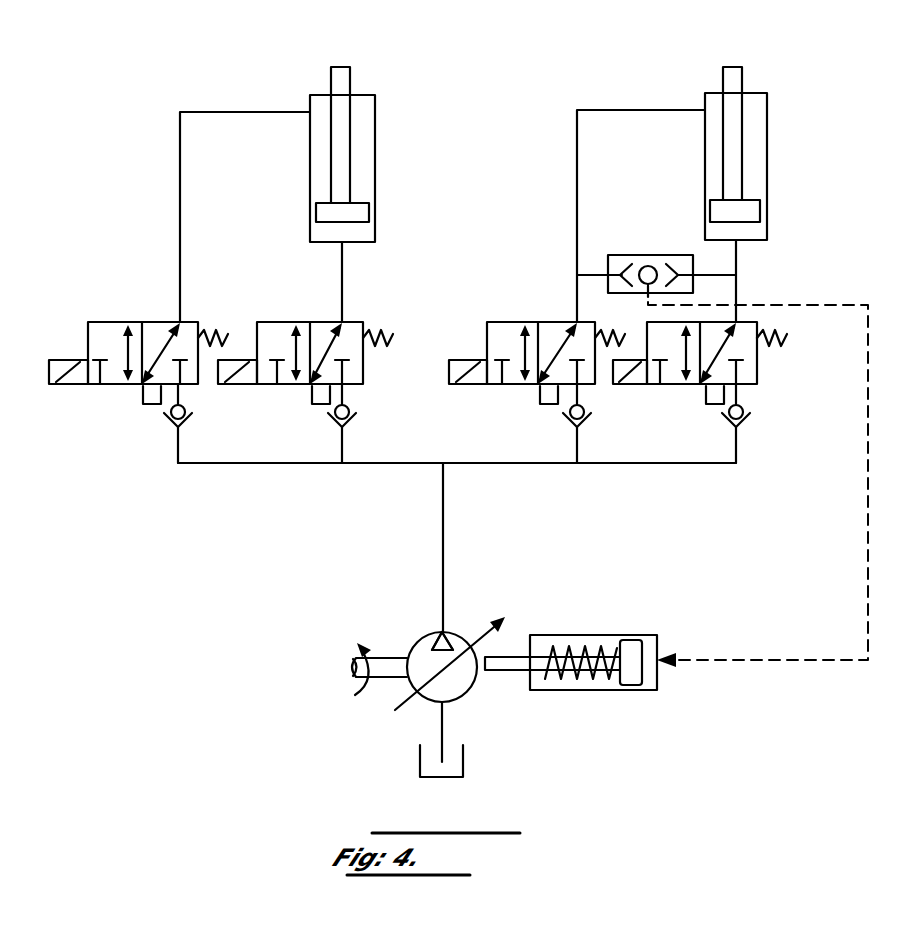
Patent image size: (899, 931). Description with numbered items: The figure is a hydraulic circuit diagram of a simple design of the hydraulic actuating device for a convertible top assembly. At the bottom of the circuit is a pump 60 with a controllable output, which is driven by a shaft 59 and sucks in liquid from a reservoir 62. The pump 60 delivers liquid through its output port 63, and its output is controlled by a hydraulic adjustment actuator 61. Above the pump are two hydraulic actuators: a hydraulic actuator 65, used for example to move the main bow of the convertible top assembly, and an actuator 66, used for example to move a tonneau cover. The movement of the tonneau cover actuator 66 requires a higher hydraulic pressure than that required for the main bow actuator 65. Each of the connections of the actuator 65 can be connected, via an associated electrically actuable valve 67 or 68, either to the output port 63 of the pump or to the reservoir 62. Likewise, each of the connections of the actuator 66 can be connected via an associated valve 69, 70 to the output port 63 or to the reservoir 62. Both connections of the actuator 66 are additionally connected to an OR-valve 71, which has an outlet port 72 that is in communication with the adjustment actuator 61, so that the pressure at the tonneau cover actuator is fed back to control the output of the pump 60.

The shaft 59 is at (387, 678).
The pump 60 is at (405, 645).
The hydraulic adjustment actuator 61 is at (598, 624).
The reservoir 62 is at (463, 760).
The output port 63 is at (448, 625).
The hydraulic actuator 65 is at (391, 100).
The actuator 66 is at (791, 101).
The electrically actuable valve 67 is at (116, 307).
The electrically actuable valve 68 is at (296, 320).
The valve 69 is at (530, 312).
The valve 70 is at (760, 370).
The OR-valve 71 is at (641, 255).
The outlet port 72 is at (643, 297).